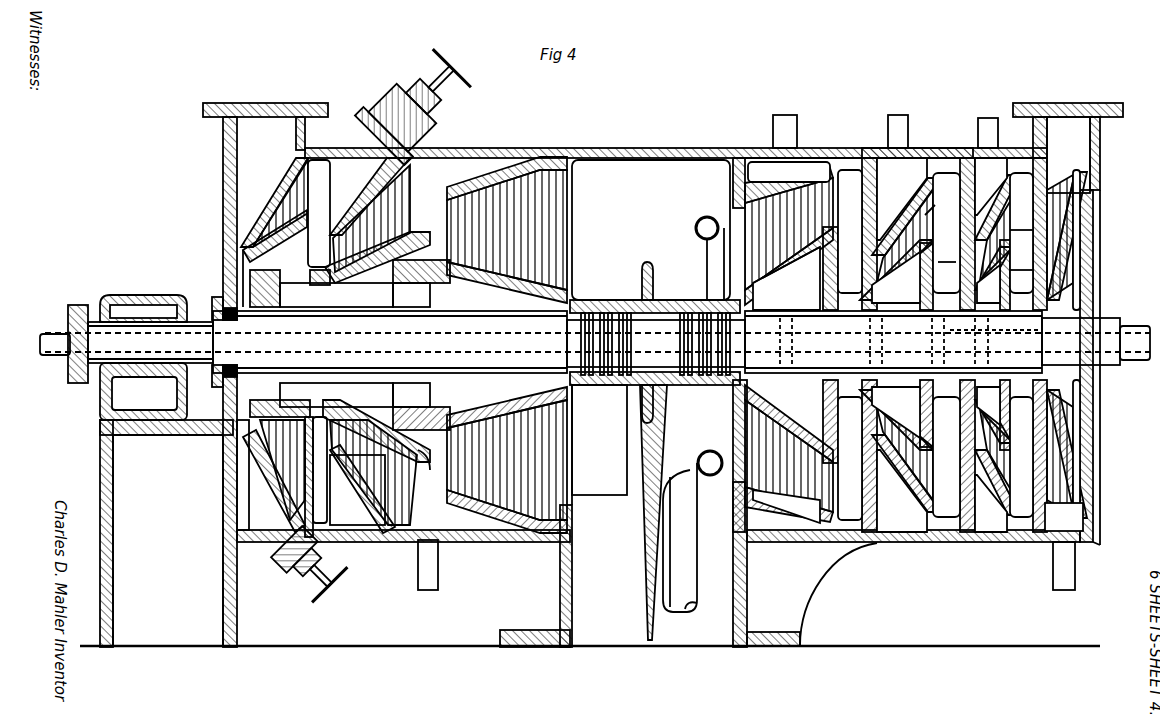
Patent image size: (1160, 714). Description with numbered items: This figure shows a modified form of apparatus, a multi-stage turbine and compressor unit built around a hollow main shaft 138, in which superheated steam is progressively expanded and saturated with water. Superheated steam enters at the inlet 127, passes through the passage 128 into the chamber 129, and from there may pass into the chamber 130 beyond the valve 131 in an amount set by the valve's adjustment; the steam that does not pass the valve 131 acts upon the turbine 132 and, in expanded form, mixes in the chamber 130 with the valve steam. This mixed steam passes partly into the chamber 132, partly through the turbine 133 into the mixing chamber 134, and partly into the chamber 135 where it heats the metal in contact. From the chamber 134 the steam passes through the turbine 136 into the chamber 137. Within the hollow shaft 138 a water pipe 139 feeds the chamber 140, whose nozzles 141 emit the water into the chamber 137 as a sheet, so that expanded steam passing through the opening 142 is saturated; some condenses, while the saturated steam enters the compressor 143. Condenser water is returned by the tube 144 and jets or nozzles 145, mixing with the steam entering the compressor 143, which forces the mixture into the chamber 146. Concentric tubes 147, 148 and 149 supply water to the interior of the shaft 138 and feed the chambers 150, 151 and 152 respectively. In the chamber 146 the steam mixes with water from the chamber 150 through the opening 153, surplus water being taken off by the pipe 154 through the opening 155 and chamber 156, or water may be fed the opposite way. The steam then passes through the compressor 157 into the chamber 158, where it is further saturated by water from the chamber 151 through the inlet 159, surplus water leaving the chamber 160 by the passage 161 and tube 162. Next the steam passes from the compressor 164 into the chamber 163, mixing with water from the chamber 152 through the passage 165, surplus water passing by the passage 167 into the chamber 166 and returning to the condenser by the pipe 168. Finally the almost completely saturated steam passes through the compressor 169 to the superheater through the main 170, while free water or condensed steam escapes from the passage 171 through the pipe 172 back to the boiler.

The inlet 127 is at (272, 112).
The passage 128 is at (243, 252).
The chamber 129 is at (271, 476).
The chamber 130 is at (325, 535).
The valve 131 is at (310, 590).
The turbine 132 is at (310, 192).
The turbine 133 is at (405, 511).
The chamber 134 is at (432, 467).
The chamber 135 is at (507, 345).
The turbine 136 is at (560, 440).
The chamber 137 is at (630, 512).
The main shaft 138 is at (85, 305).
The water pipe 139 is at (45, 345).
The chamber 140 is at (648, 380).
The nozzles 141 is at (648, 268).
The opening 142 is at (665, 185).
The compressor 143 is at (738, 216).
The tube 144 is at (685, 553).
The jets or nozzles 145 is at (720, 246).
The chamber 146 is at (853, 345).
The concentric tube 147 is at (812, 348).
The concentric tube 148 is at (924, 348).
The concentric tube 149 is at (1064, 238).
The chamber 150 is at (786, 385).
The chamber 151 is at (896, 345).
The chamber 152 is at (992, 345).
The opening 153 is at (786, 265).
The pipe 154 is at (790, 118).
The opening 155 is at (832, 158).
The chamber 156 is at (789, 172).
The compressor 157 is at (949, 345).
The chamber 158 is at (952, 272).
The inlet 159 is at (925, 215).
The chamber 160 is at (902, 345).
The passage 161 is at (925, 158).
The tube 162 is at (905, 118).
The chamber 163 is at (1026, 219).
The compressor 164 is at (1025, 345).
The passage 165 is at (1026, 278).
The chamber 166 is at (991, 345).
The passage 167 is at (1035, 115).
The pipe 168 is at (990, 118).
The compressor 169 is at (1076, 182).
The main 170 is at (1068, 148).
The passage 171 is at (1064, 517).
The pipe 172 is at (1053, 580).